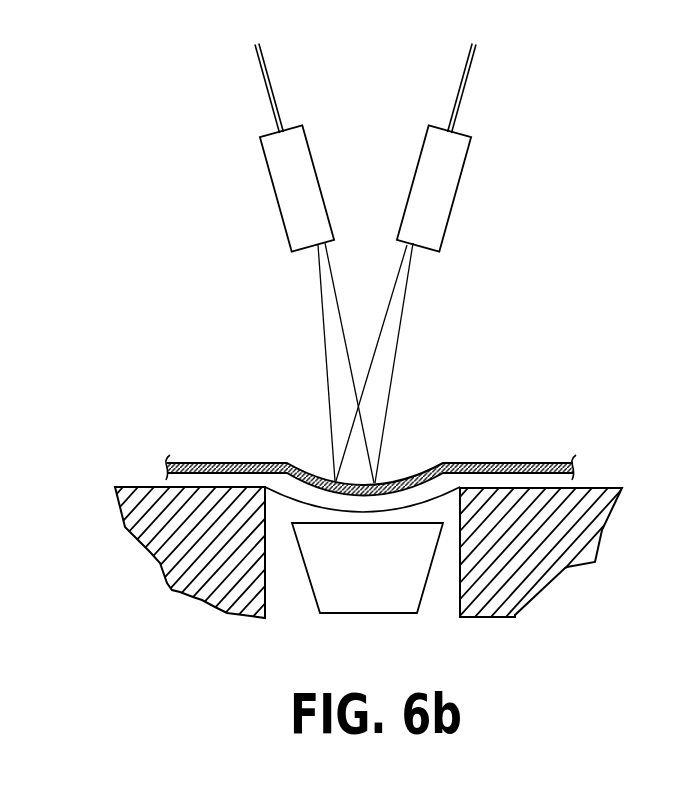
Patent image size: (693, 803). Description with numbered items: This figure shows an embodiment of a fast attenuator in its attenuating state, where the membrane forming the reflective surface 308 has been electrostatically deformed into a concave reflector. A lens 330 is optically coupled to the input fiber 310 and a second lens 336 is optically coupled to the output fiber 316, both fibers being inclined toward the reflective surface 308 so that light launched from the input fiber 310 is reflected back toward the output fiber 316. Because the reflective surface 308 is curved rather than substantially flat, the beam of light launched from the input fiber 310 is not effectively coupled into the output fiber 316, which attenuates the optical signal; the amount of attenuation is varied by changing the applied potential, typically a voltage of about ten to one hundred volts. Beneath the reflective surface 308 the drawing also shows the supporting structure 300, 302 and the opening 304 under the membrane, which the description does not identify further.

The sensor body / substrate 300 is at (345, 549).
The substrate 302 is at (515, 583).
The cavity 304 is at (390, 613).
The reflective surface 308 is at (533, 463).
The input fiber 310 is at (255, 65).
The output fiber 316 is at (475, 67).
The lens 330 is at (277, 187).
The lens 336 is at (457, 187).